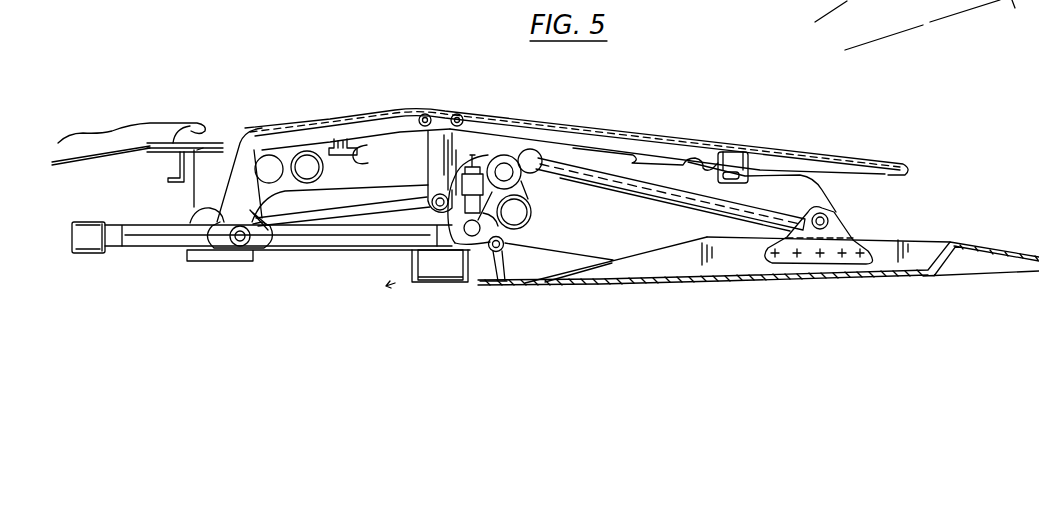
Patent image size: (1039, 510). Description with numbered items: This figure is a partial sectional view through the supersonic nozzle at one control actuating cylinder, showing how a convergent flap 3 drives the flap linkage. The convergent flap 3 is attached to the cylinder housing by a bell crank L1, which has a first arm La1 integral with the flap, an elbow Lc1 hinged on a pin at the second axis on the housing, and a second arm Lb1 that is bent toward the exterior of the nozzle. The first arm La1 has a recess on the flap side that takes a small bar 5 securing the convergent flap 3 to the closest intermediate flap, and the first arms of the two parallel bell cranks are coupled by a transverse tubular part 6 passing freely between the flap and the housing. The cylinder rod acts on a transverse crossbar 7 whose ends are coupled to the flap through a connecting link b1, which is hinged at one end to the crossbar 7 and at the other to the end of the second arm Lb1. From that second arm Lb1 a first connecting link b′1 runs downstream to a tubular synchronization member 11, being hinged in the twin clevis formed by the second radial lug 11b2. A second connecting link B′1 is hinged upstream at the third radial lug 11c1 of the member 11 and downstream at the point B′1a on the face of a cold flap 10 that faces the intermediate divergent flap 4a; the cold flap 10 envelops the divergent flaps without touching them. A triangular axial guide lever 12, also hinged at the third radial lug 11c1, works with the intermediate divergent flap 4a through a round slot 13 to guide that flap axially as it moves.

The convergent flap 3 is at (378, 108).
The intermediate divergent flap 4a is at (625, 125).
The small bar 5 is at (337, 128).
The first arm of bell crank La1 is at (369, 164).
The elbow of bell crank Lc1 is at (268, 157).
The tubular part 6 is at (322, 174).
The bell crank L1 is at (262, 192).
The second arm of bell crank Lb1 is at (262, 244).
The connecting link b1 is at (148, 240).
The first connecting link b′1 is at (309, 236).
The transverse crossbar 7 is at (74, 255).
The tubular synchronization member 11 is at (532, 217).
The third radial lug 11c1 is at (521, 177).
The second radial lug 11b2 is at (505, 241).
The second connecting link B′1 is at (764, 208).
The axial guide lever 12 is at (574, 147).
The round slot 13 is at (736, 171).
The hinge point of second connecting link on cold flap B′1a is at (830, 218).
The cold flap 10 is at (701, 281).